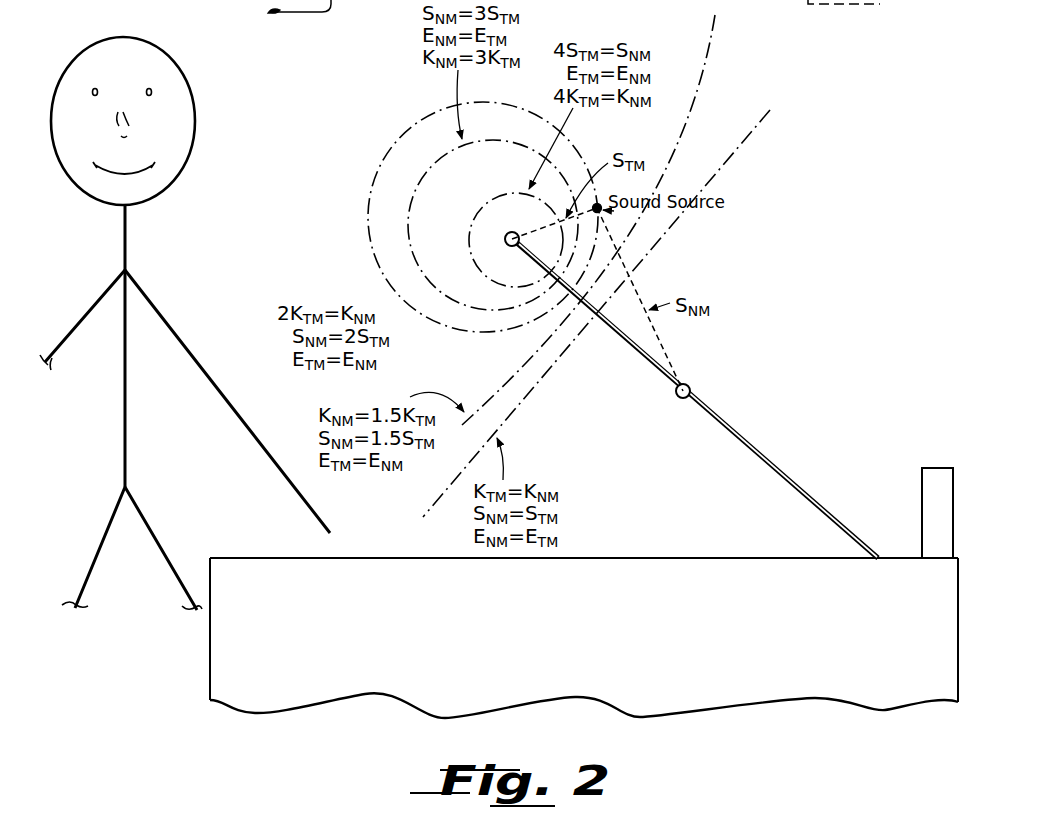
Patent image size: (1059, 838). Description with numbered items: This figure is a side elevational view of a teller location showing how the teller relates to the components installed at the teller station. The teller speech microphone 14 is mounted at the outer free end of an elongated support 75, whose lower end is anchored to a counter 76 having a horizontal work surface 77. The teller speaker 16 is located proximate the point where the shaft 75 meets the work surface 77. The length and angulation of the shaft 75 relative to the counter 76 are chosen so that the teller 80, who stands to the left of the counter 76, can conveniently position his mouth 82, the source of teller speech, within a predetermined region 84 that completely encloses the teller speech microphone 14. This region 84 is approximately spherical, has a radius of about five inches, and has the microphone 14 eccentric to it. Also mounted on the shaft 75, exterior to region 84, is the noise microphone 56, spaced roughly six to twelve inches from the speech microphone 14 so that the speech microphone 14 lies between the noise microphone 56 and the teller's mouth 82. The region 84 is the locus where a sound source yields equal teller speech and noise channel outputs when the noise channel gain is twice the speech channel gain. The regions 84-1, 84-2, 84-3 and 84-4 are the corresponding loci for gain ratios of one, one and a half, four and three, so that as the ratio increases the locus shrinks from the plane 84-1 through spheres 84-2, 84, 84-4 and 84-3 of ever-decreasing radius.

The teller speech microphone 14 is at (505, 240).
The teller speaker 16 is at (937, 478).
The noise microphone 56 is at (689, 383).
The elongated support 75 is at (748, 436).
The counter 76 is at (548, 644).
The horizontal work surface 77 is at (764, 558).
The teller 80 is at (185, 323).
The mouth 82 is at (128, 169).
The predetermined region 84 is at (368, 193).
The region 84-1 is at (766, 131).
The region 84-2 is at (711, 89).
The region 84-3 is at (482, 209).
The region 84-4 is at (494, 141).